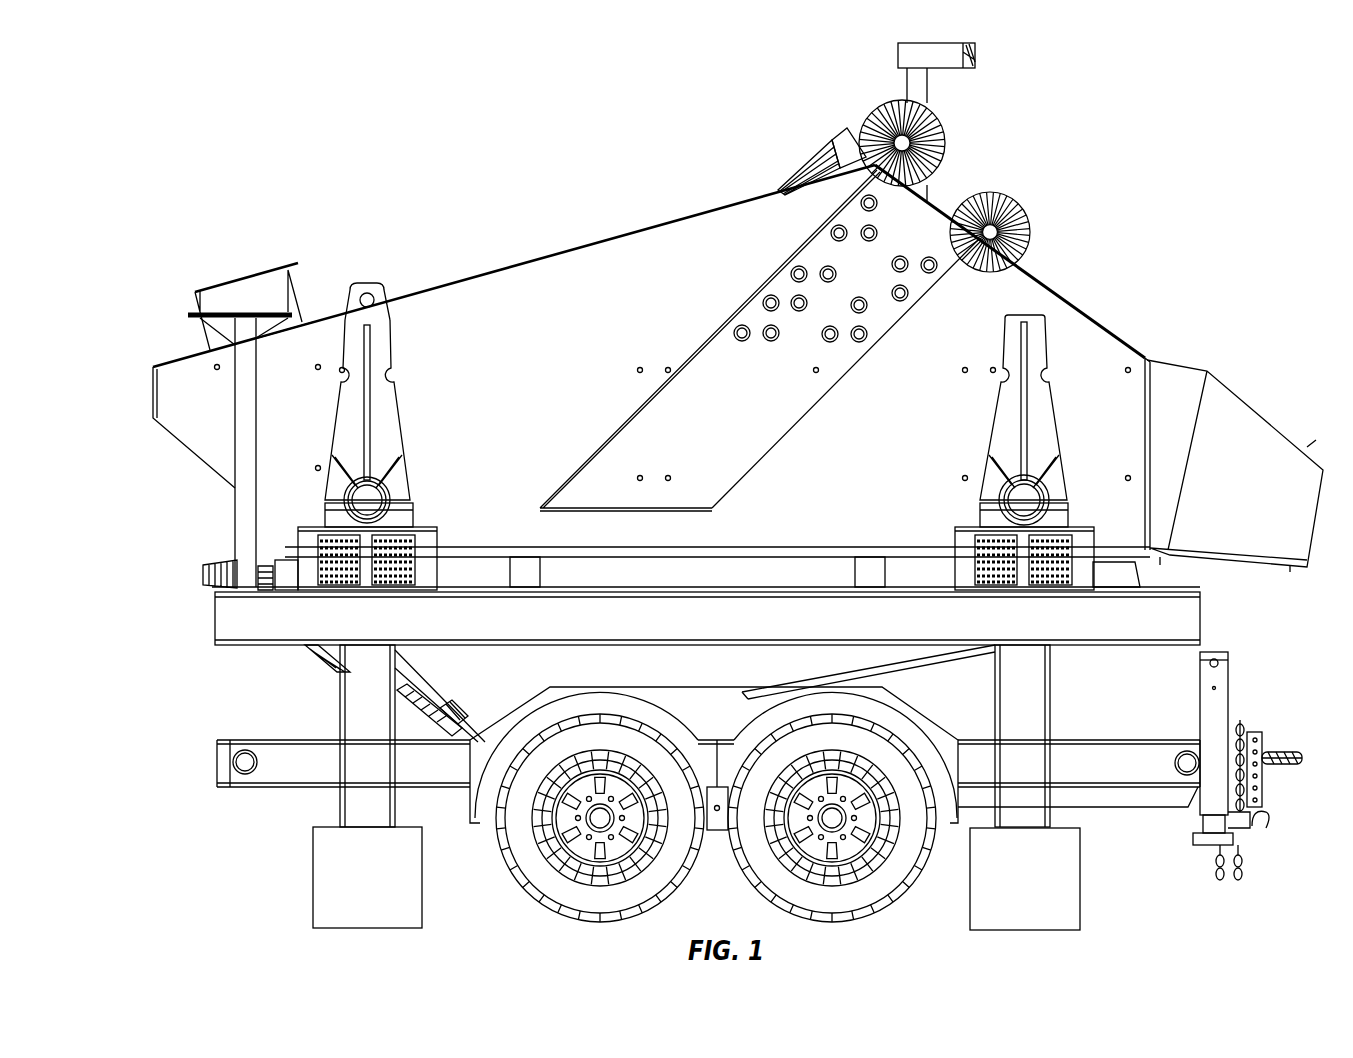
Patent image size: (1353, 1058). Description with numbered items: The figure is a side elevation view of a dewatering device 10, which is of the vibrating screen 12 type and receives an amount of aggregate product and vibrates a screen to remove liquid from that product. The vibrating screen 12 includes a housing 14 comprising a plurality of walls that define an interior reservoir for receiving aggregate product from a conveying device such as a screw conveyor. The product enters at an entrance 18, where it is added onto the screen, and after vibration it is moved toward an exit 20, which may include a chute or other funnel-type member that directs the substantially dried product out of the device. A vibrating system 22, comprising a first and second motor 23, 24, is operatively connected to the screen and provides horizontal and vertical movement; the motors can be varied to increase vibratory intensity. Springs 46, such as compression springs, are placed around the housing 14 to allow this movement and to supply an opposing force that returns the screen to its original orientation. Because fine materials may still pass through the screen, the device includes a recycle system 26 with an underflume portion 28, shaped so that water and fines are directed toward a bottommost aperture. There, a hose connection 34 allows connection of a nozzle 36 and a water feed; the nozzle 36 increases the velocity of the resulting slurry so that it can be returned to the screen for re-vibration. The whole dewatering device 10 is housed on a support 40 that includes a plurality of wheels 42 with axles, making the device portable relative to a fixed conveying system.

The dewatering device 10 is at (1176, 126).
The vibrating screen 12 is at (604, 230).
The housing 14 is at (1050, 290).
The entrance 18 is at (178, 358).
The exit 20 is at (1250, 408).
The vibrating system 22 is at (1019, 178).
The first motor 23 is at (860, 128).
The second motor 24 is at (1043, 226).
The recycle system 26 is at (964, 660).
The underflume portion 28 is at (890, 670).
The hose connection 34 is at (478, 712).
The nozzle 36 is at (330, 658).
The support 40 is at (1100, 826).
The wheels 42 is at (885, 886).
The springs 46 is at (1053, 530).